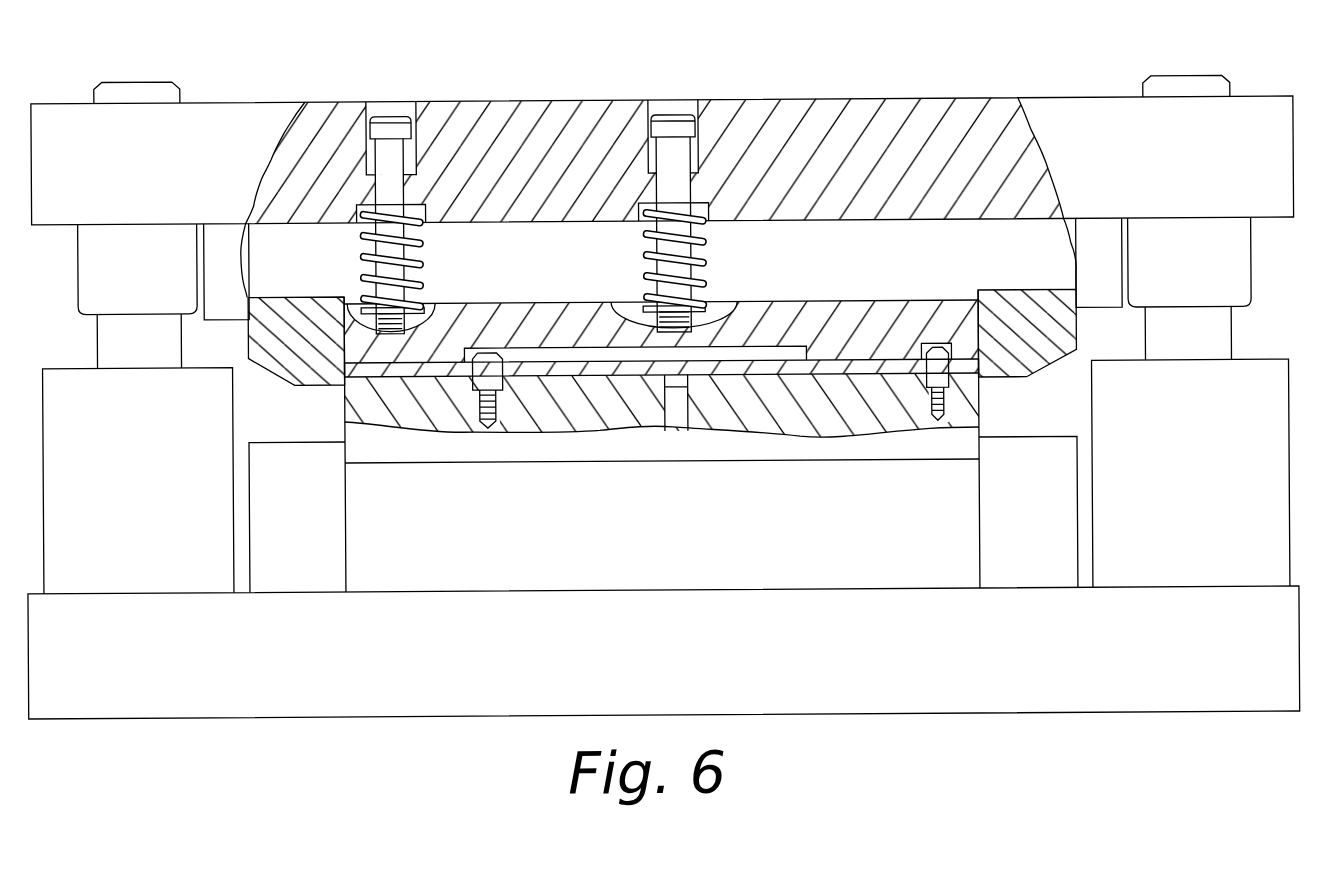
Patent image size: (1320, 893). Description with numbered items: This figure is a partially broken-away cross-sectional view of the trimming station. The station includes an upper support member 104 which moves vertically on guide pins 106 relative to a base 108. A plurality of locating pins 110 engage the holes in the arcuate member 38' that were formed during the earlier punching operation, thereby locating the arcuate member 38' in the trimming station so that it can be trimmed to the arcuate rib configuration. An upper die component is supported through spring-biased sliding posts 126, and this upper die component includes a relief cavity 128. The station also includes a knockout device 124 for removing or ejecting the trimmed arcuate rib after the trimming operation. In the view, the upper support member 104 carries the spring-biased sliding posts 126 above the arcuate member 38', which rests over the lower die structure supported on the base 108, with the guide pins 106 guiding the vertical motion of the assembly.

The upper support member 104 is at (943, 120).
The guide pins 106 is at (118, 333).
The base 108 is at (935, 673).
The locating pins 110 is at (490, 378).
The knockout device 124 is at (673, 421).
The spring-biased sliding posts 126 is at (397, 162).
The relief cavity 128 is at (550, 352).
The arcuate member 38' is at (661, 313).